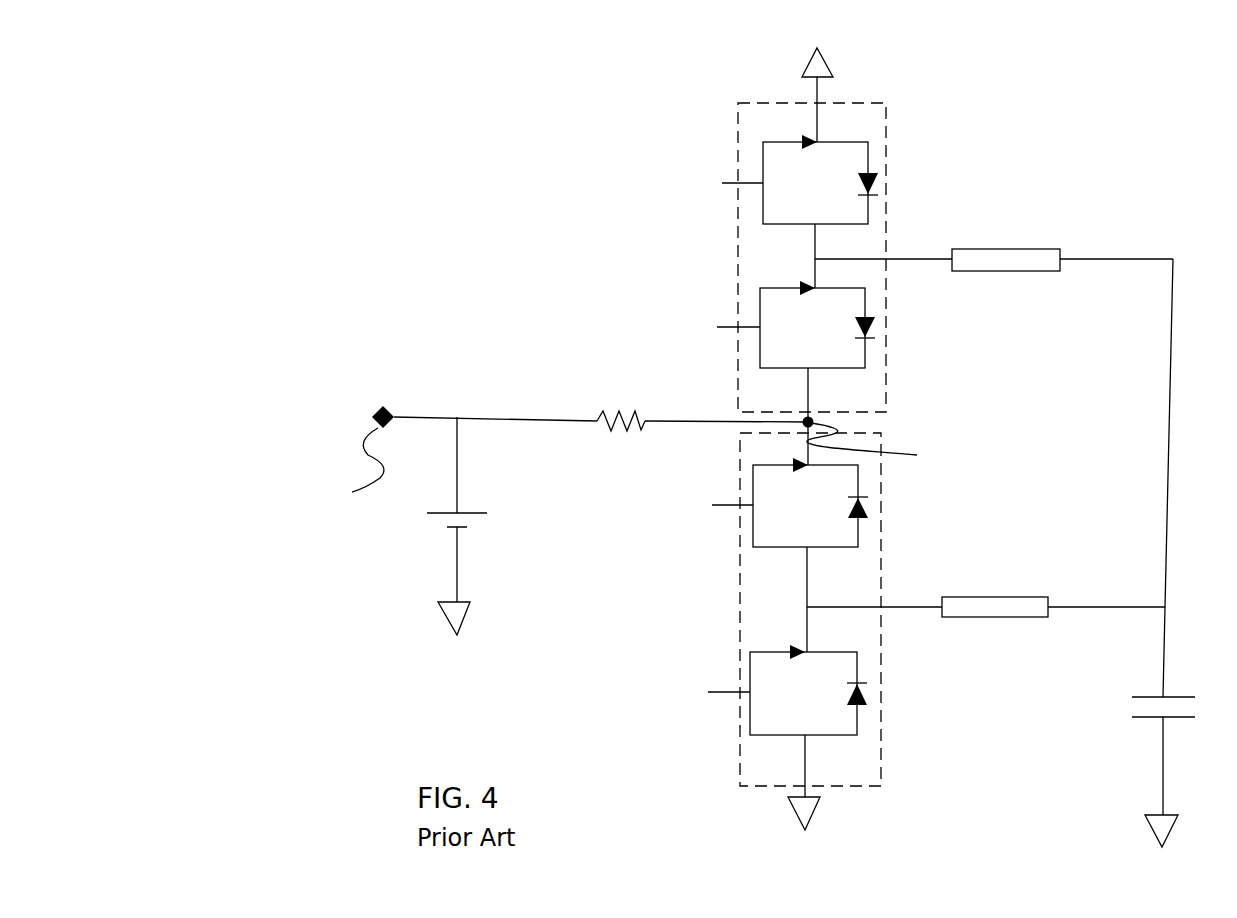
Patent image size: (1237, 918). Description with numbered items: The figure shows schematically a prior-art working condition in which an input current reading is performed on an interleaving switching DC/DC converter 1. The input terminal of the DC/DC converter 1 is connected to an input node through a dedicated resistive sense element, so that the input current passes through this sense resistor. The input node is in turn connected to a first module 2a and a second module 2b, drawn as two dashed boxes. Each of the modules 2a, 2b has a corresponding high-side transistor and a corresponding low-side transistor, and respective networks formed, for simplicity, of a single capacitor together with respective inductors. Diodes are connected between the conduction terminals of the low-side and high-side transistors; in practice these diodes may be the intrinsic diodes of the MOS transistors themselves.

The DC/DC converter 1 is at (290, 552).
The first module 2a is at (862, 249).
The second module 2b is at (763, 572).